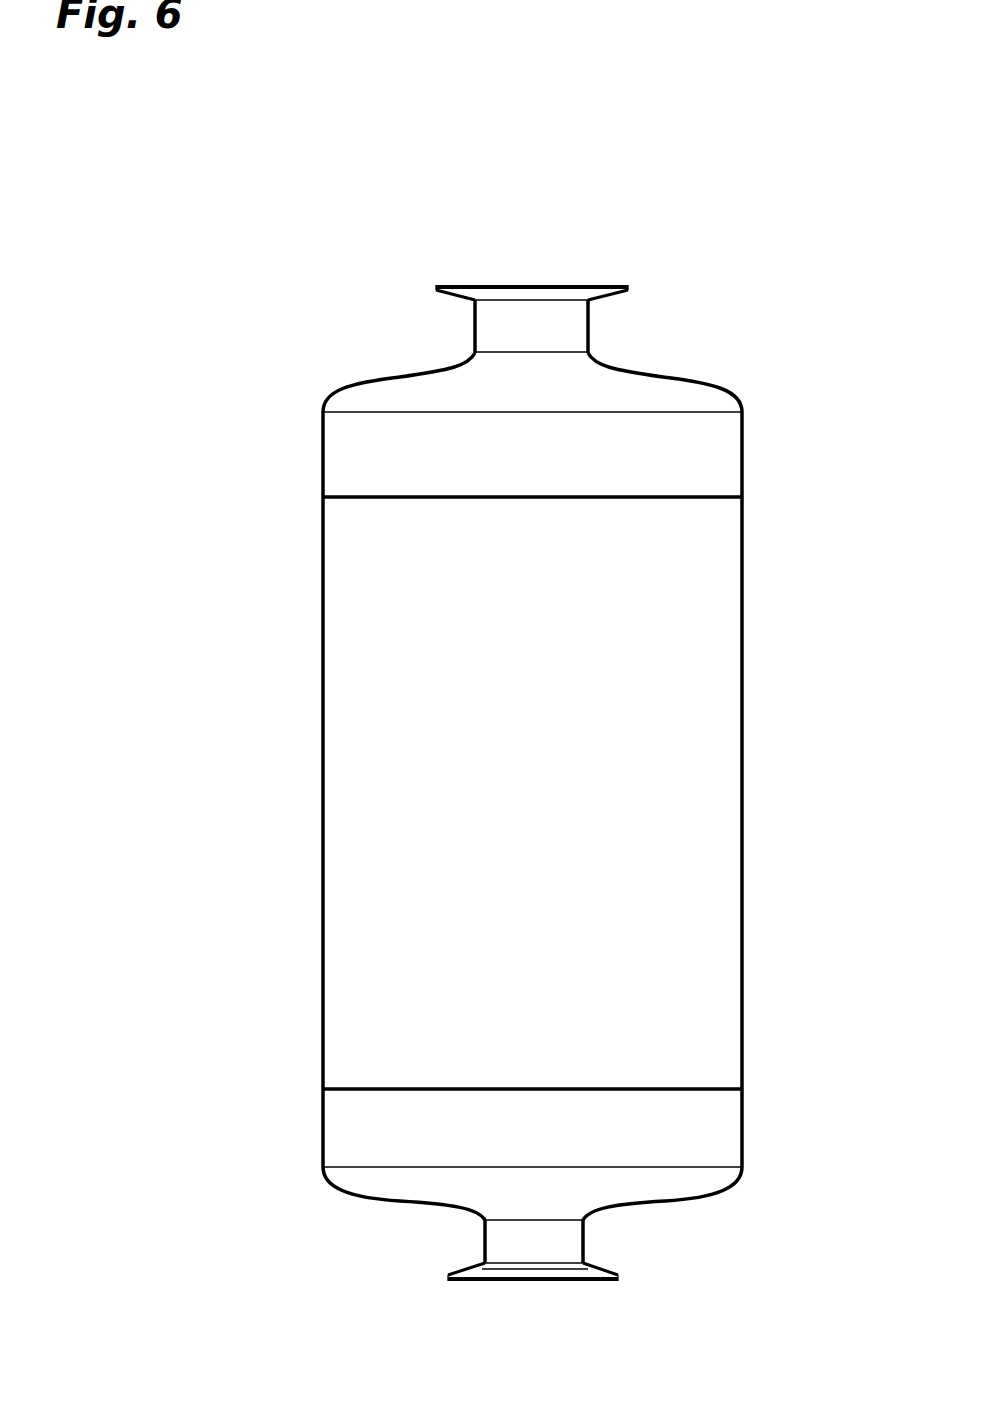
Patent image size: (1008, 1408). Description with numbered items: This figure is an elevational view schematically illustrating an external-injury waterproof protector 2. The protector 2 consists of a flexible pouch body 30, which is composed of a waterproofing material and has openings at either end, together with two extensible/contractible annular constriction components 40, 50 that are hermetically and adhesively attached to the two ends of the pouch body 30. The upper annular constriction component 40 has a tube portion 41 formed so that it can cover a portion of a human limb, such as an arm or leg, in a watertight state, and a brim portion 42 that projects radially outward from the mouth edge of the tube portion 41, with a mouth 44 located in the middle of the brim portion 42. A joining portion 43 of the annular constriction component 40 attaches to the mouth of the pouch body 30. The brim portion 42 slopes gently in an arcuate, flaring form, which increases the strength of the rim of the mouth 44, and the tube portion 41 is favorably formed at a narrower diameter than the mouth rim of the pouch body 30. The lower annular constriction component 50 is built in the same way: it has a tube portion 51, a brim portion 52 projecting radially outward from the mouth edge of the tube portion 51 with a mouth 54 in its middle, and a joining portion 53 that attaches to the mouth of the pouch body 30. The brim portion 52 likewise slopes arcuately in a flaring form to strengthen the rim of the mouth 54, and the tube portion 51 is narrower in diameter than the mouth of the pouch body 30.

The external-injury waterproof protector 2 is at (722, 182).
The pouch body 30 is at (722, 782).
The annular constriction component 40 is at (752, 498).
The tube portion 41 is at (490, 313).
The brim portion 42 is at (462, 287).
The joining portion 43 is at (340, 470).
The mouth 44 is at (528, 278).
The annular constriction component 50 is at (762, 1282).
The tube portion 51 is at (482, 1253).
The brim portion 52 is at (597, 1280).
The joining portion 53 is at (347, 1133).
The mouth 54 is at (532, 1285).